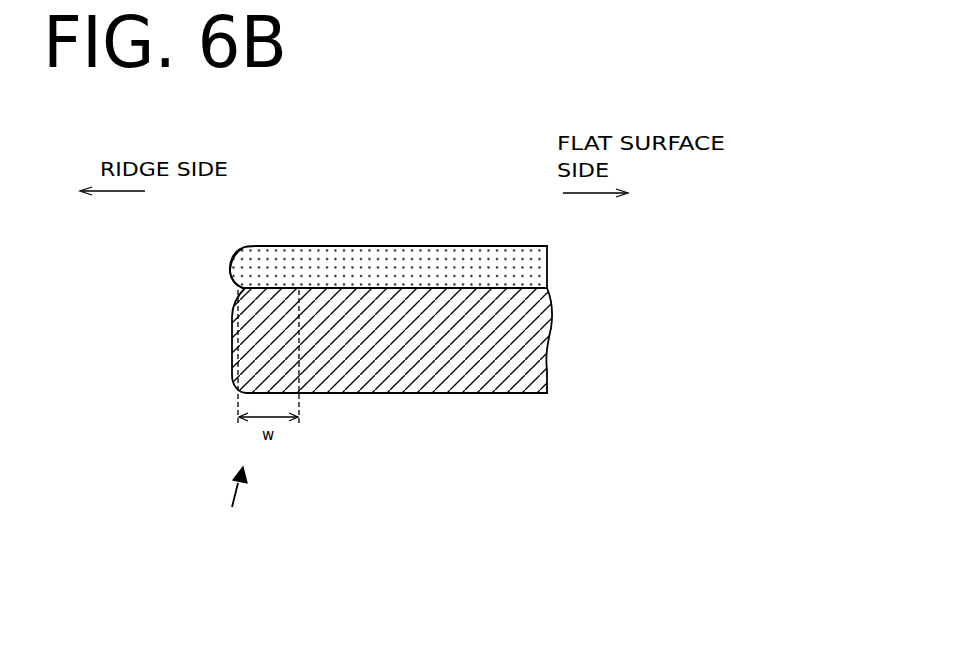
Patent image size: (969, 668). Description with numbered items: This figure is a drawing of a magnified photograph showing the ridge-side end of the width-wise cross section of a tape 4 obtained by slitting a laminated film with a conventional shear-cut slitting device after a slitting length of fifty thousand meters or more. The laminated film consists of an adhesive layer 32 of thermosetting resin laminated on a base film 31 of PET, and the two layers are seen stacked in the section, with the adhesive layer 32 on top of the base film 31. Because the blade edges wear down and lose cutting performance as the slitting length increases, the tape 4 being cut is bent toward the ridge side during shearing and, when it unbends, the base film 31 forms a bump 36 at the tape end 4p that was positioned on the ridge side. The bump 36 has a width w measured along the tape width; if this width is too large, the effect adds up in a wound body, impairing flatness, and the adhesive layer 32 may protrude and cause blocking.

The tape 4 is at (464, 280).
The base film 31 is at (528, 357).
The adhesive layer 32 is at (527, 273).
The bump 36 is at (268, 286).
The tape end 4p is at (230, 500).